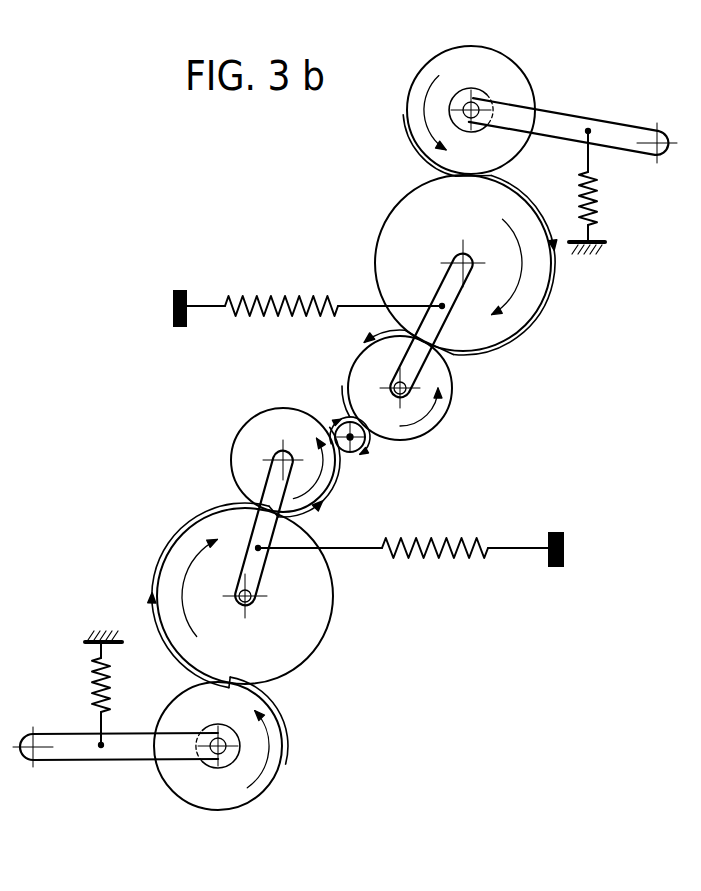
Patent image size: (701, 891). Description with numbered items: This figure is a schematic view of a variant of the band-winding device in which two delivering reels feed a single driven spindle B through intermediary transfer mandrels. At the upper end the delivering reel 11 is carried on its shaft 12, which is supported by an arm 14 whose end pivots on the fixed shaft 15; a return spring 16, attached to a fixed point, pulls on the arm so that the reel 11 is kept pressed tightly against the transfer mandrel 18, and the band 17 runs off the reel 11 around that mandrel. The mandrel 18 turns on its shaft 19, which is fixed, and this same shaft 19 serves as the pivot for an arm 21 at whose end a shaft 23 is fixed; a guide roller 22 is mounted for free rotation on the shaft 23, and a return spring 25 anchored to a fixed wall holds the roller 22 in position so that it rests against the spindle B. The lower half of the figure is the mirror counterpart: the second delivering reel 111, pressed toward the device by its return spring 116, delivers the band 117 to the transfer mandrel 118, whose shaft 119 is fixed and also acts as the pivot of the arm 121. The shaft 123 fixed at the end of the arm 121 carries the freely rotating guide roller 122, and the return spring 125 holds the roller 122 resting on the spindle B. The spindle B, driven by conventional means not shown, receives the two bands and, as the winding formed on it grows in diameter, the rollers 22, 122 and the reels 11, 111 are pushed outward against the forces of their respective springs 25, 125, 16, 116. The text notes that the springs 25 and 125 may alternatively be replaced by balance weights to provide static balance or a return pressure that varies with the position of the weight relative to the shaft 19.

The delivering reel 11 is at (455, 70).
The shaft 12 is at (480, 98).
The arm 14 is at (557, 127).
The fixed shaft 15 is at (647, 135).
The spring 16 is at (593, 217).
The band 17 is at (403, 132).
The transfer mandrel 18 is at (435, 203).
The shaft 19 is at (455, 262).
The arm 21 is at (453, 292).
The guide roller 22 is at (443, 403).
The shaft 23 is at (405, 377).
The spring 25 is at (282, 302).
The spindle B is at (350, 453).
The guide roller 122 is at (263, 428).
The shaft 123 is at (277, 458).
The arm 121 is at (262, 492).
The spring 125 is at (448, 542).
The transfer mandrel 118 is at (303, 590).
The shaft 119 is at (250, 600).
The delivering reel 111 is at (223, 793).
The spring 116 is at (97, 676).
The band 117 is at (285, 748).